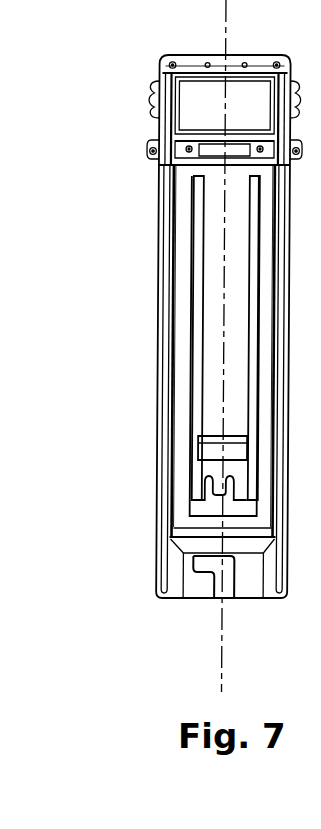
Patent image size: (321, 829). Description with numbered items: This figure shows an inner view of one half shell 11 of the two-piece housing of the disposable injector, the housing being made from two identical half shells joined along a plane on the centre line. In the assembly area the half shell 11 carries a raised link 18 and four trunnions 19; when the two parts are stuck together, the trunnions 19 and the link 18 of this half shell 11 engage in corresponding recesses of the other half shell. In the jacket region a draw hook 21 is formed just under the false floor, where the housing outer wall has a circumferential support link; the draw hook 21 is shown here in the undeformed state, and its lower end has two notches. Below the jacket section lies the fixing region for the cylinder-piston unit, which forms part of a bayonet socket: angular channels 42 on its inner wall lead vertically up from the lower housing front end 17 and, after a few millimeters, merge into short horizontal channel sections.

The trunnions 19 is at (167, 67).
The half shell 11 is at (184, 224).
The raised link 18 is at (160, 279).
The draw hook 21 is at (219, 370).
The angular channels 42 is at (210, 564).
The lower housing front end 17 is at (149, 586).